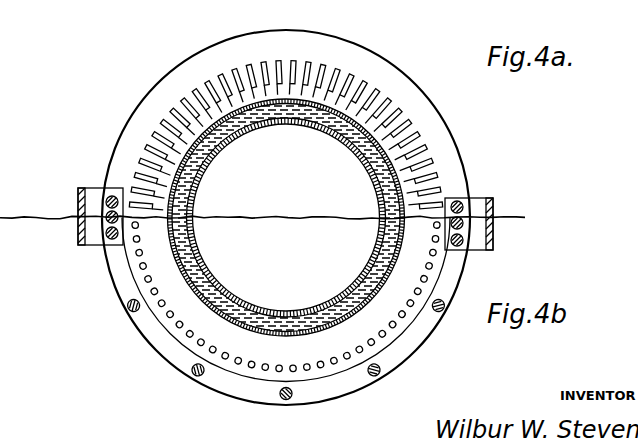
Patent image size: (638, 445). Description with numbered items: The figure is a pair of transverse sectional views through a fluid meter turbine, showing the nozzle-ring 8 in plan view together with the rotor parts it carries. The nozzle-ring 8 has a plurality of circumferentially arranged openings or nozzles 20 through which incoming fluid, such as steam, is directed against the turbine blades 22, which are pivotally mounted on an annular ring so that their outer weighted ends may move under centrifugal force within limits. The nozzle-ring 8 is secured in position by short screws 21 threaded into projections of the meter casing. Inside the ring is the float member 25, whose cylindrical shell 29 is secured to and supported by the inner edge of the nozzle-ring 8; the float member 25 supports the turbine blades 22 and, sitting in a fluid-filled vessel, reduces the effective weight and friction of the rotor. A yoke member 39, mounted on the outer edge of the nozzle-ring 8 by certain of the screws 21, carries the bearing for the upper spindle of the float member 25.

In FIG. 4B, the nozzle-ring 8 is at (157, 350).
In FIG. 4B, the openings or nozzles 20 is at (265, 372).
In FIG. 4B, the short screws 21 is at (367, 380).
In FIG. 4A, the turbine blades 22 is at (380, 105).
In FIG. 4B, the float member 25 is at (286, 217).
In FIG. 4B, the cylindrical shell 29 is at (177, 265).
In FIG. 4A, the yoke member 39 is at (78, 193).